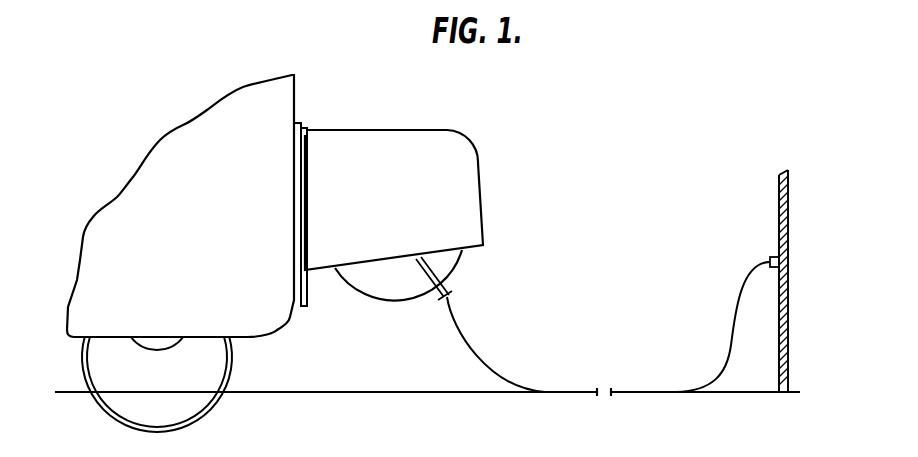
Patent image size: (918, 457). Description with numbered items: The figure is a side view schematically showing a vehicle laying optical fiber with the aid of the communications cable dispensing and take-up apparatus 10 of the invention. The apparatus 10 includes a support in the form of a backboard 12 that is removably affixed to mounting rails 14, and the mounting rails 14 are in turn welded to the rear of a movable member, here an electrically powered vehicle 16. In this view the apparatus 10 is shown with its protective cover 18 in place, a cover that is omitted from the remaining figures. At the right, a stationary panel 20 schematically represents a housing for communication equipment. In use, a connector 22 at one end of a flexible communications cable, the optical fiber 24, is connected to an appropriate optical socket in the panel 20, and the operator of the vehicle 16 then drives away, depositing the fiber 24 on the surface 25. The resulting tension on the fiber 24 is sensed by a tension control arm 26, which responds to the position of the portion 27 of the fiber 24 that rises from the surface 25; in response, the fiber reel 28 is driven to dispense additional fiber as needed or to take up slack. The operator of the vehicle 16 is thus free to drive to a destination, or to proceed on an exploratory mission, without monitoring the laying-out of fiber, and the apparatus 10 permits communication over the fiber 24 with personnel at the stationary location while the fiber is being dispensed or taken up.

The communications cable dispensing and take-up apparatus 10 is at (518, 176).
The backboard 12 is at (309, 207).
The mounting rails 14 is at (303, 307).
The electrically powered vehicle 16 is at (282, 107).
The protective cover 18 is at (387, 143).
The stationary panel 20 is at (779, 203).
The connector 22 is at (770, 258).
The optical fiber 24 is at (733, 333).
The surface 25 is at (710, 393).
The tension control arm 26 is at (433, 270).
The portion of fiber 27 is at (473, 358).
The fiber reel 28 is at (370, 280).